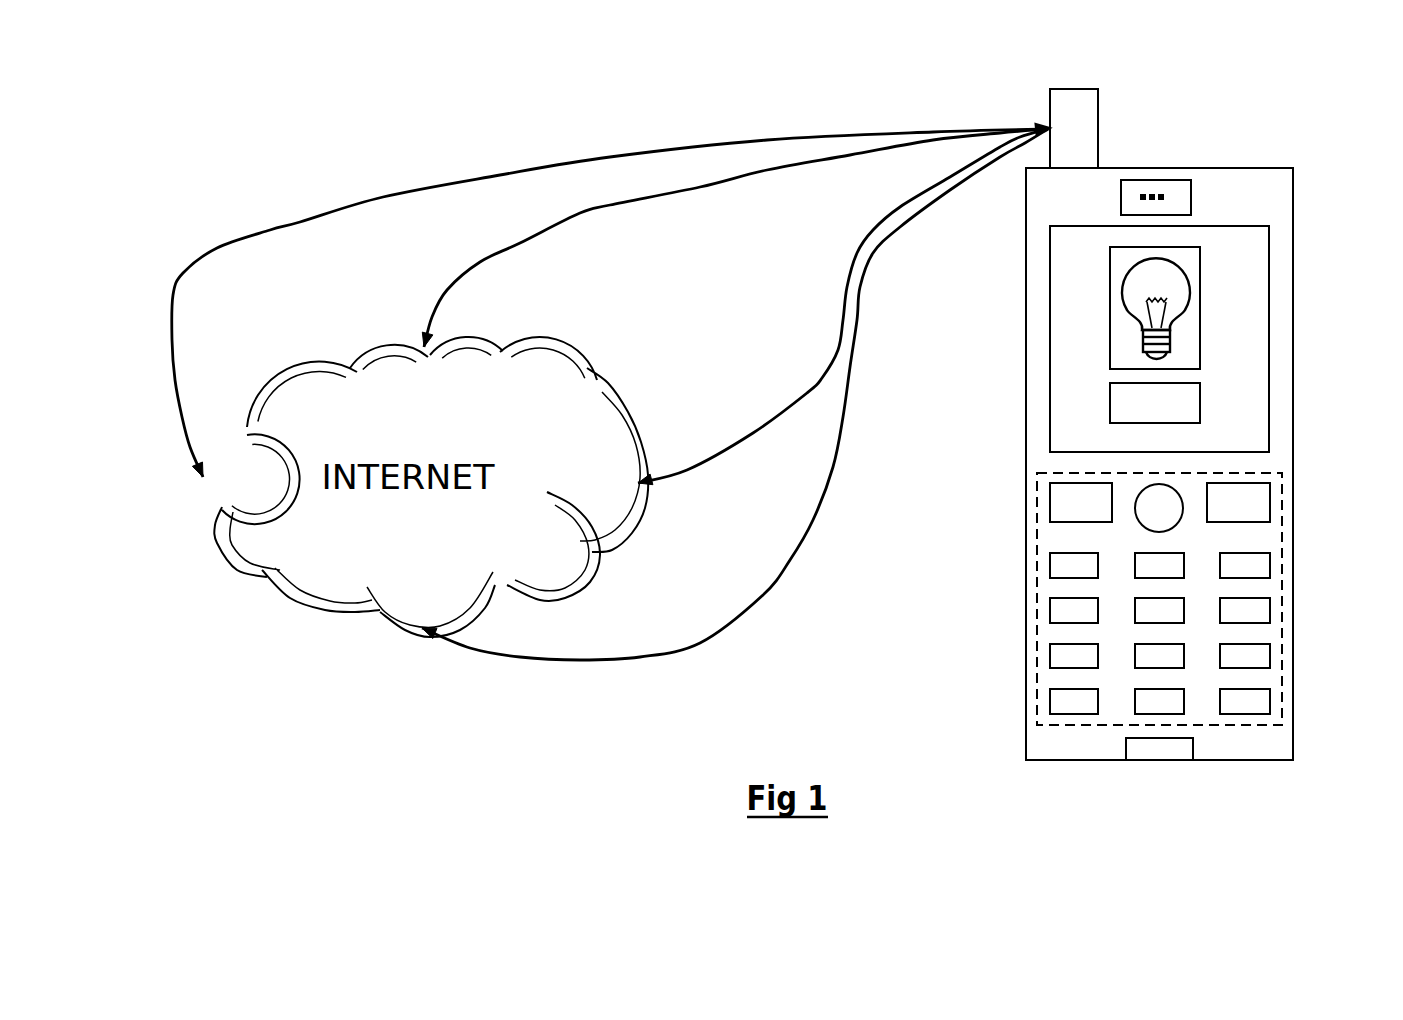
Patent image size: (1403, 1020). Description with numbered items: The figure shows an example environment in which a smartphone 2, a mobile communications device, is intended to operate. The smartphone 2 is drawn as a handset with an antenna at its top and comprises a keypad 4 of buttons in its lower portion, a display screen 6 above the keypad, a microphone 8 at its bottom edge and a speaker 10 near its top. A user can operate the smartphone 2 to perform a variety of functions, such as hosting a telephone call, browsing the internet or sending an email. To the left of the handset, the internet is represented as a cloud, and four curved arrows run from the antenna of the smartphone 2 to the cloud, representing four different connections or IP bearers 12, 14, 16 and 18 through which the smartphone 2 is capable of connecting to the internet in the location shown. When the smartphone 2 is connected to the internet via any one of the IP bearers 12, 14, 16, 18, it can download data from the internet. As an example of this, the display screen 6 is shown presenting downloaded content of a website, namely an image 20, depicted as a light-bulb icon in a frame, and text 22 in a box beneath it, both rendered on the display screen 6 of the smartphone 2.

The smartphone 2 is at (1297, 121).
The keypad 4 is at (1282, 617).
The display screen 6 is at (1268, 320).
The microphone 8 is at (1147, 743).
The speaker 10 is at (1165, 197).
The IP bearer 12 is at (173, 350).
The IP bearer 14 is at (523, 243).
The IP bearer 16 is at (710, 458).
The IP bearer 18 is at (763, 597).
The image 20 is at (1110, 278).
The text 22 is at (1110, 385).